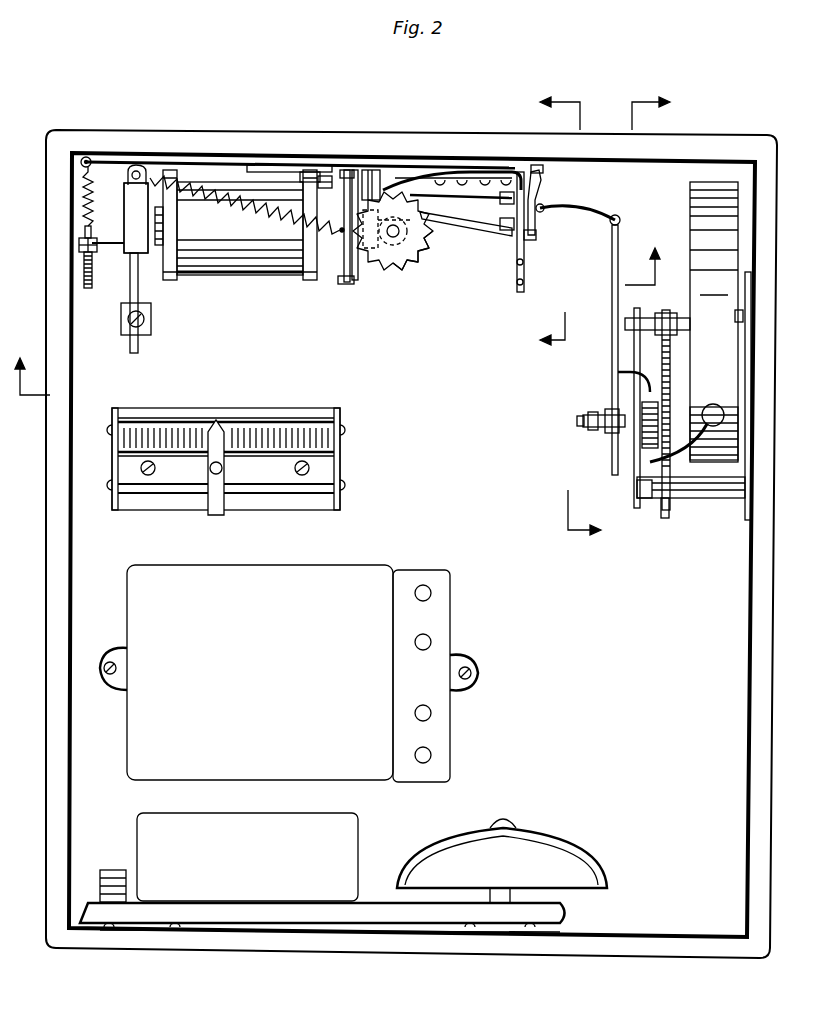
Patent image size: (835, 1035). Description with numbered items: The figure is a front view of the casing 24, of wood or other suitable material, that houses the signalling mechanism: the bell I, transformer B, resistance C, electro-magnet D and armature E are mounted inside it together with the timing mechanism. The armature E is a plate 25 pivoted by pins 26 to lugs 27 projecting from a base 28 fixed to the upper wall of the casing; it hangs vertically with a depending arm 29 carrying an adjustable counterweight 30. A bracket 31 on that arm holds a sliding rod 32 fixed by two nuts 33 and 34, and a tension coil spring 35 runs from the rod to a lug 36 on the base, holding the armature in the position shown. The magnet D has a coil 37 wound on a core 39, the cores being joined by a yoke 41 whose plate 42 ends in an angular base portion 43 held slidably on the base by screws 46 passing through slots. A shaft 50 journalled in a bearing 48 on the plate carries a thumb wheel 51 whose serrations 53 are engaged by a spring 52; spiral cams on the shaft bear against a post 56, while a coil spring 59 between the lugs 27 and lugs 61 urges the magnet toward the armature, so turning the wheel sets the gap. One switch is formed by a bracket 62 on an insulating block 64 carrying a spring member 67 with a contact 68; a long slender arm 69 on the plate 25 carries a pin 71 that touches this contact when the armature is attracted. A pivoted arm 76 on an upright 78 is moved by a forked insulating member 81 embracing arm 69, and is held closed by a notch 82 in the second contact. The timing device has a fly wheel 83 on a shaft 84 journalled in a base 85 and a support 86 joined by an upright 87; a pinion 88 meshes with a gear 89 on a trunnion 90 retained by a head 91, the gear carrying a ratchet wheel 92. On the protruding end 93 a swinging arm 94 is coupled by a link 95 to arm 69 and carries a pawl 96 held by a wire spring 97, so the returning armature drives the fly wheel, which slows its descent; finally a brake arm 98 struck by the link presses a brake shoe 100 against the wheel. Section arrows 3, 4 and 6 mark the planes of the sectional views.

The casing 24 is at (228, 946).
The plate 25 is at (130, 210).
The pins 26 is at (137, 168).
The lugs 27 is at (146, 190).
The base 28 is at (258, 164).
The depending arm 29 is at (138, 290).
The counterweight 30 is at (151, 330).
The bracket 31 is at (112, 248).
The sliding rod 32 is at (86, 229).
The nut 33 is at (82, 252).
The nut 34 is at (84, 270).
The tension coil spring 35 is at (62, 166).
The lug 36 is at (88, 158).
The coil 37 is at (265, 265).
The core 39 is at (172, 224).
The yoke 41 is at (346, 262).
The plate 42 is at (358, 253).
The angular base portion 43 is at (322, 175).
The screws 46 is at (304, 172).
The bearing 48 is at (372, 250).
The shaft 50 is at (396, 237).
The thumb wheel 51 is at (400, 258).
The spring 52 is at (432, 172).
The serrations 53 is at (426, 252).
The post 56 is at (370, 178).
The coil spring 59 is at (218, 178).
The lugs 61 is at (345, 172).
The bracket 62 is at (516, 243).
The insulating block 64 is at (519, 168).
The spring member 67 is at (528, 276).
The contact 68 is at (541, 180).
The arm 69 is at (452, 210).
The pin 71 is at (548, 207).
The pivoted arm 76 is at (482, 172).
The upright 78 is at (441, 176).
The forked insulating member 81 is at (530, 238).
The indentation 82 is at (542, 166).
The fly wheel 83 is at (712, 190).
The shaft 84 is at (737, 314).
The base 85 is at (748, 272).
The support 86 is at (636, 342).
The upright 87 is at (697, 499).
The pinion 88 is at (668, 312).
The gear 89 is at (665, 520).
The trunnion 90 is at (583, 421).
The head 91 is at (684, 406).
The ratchet wheel 92 is at (652, 494).
The protruding end 93 is at (580, 417).
The swinging arm 94 is at (627, 443).
The link 95 is at (612, 347).
The pawl 96 is at (668, 376).
The wire spring 97 is at (620, 363).
The arm 98 is at (678, 497).
The brake shoe 100 is at (723, 462).
The transformer B is at (356, 592).
The resistance C is at (323, 472).
The electro-magnet D is at (278, 250).
The armature E is at (150, 200).
The bell I is at (331, 850).
The section line 3 is at (626, 316).
The section line 4 is at (335, 311).
The section line 6 is at (546, 222).